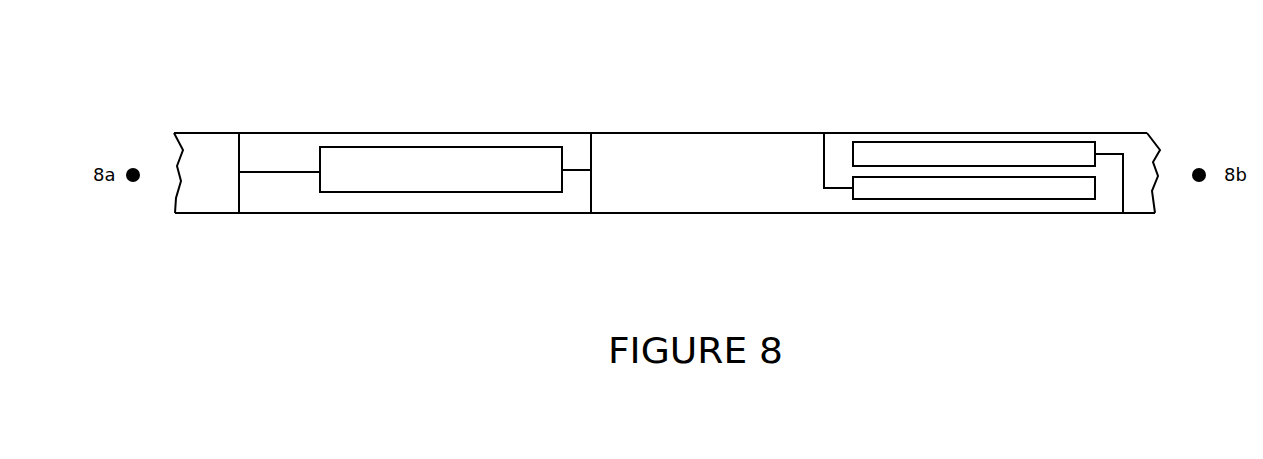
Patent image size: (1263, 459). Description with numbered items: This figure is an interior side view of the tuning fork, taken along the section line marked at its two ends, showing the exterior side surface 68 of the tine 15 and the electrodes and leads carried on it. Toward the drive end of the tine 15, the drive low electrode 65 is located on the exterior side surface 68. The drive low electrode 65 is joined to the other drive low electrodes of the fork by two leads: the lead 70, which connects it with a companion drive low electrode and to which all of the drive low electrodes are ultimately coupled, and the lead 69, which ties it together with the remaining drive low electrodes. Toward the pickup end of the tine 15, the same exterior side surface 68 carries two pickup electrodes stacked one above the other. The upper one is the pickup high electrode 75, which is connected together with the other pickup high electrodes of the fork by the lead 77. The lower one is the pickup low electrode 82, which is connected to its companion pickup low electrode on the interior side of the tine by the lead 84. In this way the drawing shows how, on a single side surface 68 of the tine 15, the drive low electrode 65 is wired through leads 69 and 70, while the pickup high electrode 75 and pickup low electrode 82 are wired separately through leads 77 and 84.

The tine 15 is at (737, 132).
The drive low electrode 65 is at (431, 175).
The exterior side surface 68 is at (620, 183).
The lead 69 is at (593, 152).
The lead 70 is at (236, 159).
The pickup high electrode 75 is at (928, 152).
The lead 77 is at (1127, 177).
The pickup low electrode 82 is at (965, 188).
The lead 84 is at (820, 165).